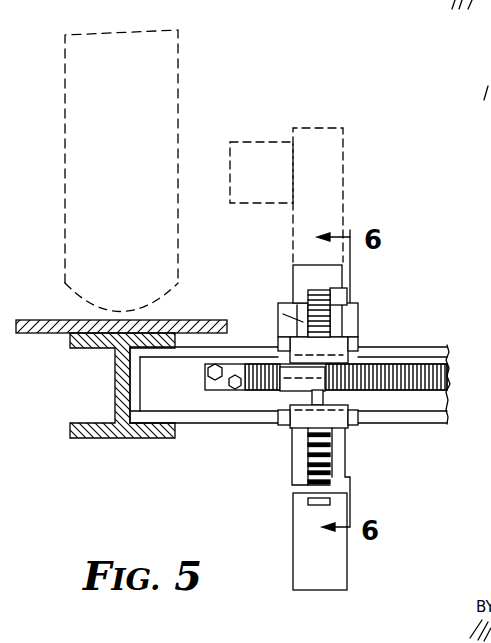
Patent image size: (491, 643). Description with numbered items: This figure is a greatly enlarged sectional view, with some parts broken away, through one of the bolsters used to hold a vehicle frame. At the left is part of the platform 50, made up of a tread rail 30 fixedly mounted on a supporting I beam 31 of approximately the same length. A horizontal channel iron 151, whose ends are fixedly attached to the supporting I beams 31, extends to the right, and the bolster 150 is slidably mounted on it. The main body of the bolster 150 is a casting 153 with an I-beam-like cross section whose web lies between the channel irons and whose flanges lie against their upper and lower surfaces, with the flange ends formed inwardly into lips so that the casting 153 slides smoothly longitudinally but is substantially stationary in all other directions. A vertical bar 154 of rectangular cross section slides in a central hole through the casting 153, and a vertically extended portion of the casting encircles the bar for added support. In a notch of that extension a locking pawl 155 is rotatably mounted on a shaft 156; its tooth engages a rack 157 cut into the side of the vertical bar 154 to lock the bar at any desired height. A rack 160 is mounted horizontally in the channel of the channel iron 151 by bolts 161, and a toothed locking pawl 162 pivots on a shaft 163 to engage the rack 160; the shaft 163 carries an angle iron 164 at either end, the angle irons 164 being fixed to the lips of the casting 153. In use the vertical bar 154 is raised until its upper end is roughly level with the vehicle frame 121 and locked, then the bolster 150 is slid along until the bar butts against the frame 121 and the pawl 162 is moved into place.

The tread rail 30 is at (189, 321).
The supporting I beam 31 is at (70, 432).
The platform 50 is at (218, 319).
The frame 121 is at (255, 138).
The bolster 150 is at (363, 313).
The channel iron 151 is at (425, 416).
The casting 153 is at (352, 315).
The vertical bar 154 is at (288, 278).
The locking pawl 155 is at (322, 322).
The shaft 156 is at (277, 311).
The rack 157 is at (300, 461).
The rack 160 is at (447, 372).
The bolts 161 is at (229, 383).
The locking pawl 162 is at (286, 392).
The shaft 163 is at (330, 404).
The angle iron 164 is at (345, 350).